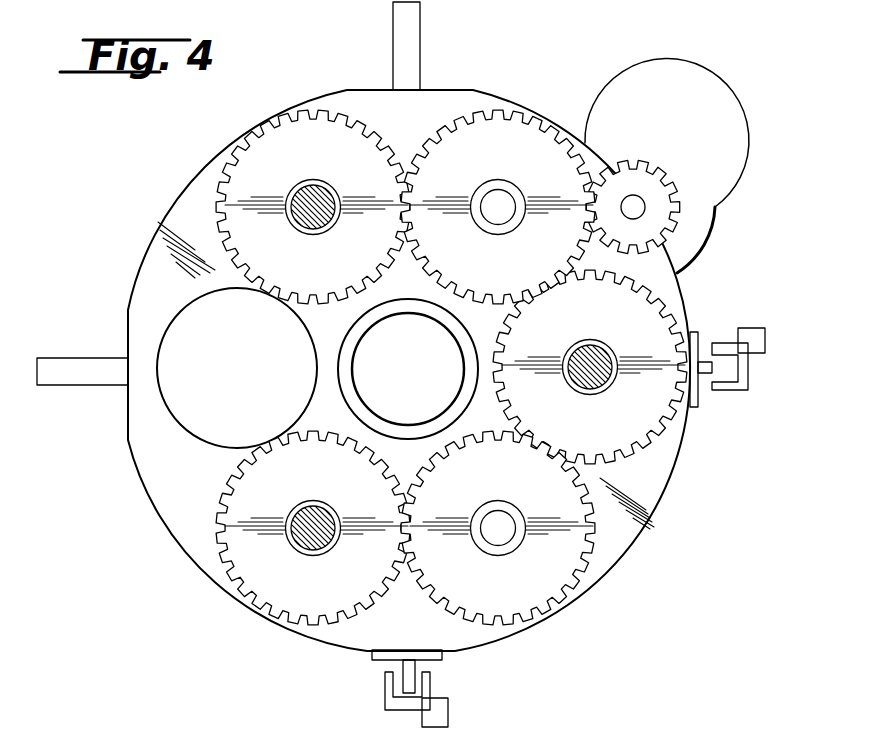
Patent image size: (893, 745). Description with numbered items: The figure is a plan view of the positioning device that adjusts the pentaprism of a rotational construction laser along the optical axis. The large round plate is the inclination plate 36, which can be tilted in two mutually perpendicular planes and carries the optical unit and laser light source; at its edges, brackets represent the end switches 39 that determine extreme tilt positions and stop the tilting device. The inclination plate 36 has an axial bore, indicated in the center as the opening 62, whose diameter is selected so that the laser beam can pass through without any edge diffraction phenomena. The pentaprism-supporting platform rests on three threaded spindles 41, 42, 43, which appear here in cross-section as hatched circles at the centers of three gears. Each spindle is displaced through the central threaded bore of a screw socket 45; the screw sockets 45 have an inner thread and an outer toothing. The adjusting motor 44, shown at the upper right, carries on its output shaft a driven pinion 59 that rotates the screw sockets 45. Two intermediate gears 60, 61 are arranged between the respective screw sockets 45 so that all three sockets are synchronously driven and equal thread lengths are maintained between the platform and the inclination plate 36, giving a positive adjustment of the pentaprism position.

The inclination plate 36 is at (135, 255).
The end switches 39 is at (447, 712).
The threaded spindle 41 is at (592, 360).
The threaded spindle 42 is at (318, 205).
The threaded spindle 43 is at (318, 526).
The adjusting motor 44 is at (648, 142).
The screw sockets 45 is at (242, 175).
The driven pinion 59 is at (668, 228).
The intermediate gear 60 is at (493, 110).
The intermediate gear 61 is at (548, 597).
The central bearing opening 62 is at (426, 386).